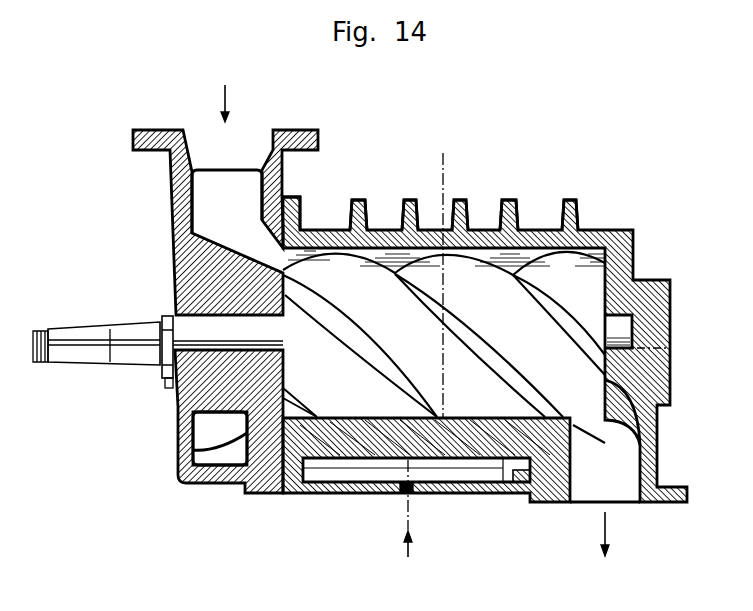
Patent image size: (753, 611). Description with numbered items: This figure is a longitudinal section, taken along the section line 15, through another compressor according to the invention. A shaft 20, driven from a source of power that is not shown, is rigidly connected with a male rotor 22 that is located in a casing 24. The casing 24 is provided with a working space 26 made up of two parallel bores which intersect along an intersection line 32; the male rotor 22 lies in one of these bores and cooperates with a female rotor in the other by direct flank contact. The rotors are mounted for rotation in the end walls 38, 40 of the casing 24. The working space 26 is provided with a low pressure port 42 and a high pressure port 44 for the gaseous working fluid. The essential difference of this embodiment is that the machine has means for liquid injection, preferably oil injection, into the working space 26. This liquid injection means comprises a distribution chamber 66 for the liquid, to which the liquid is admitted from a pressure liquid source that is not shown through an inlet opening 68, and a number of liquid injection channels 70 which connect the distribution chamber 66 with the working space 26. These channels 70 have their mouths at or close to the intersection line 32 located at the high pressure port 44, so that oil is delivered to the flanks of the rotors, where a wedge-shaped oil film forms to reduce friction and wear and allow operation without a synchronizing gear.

The section line 15 is at (443, 153).
The shaft 20 is at (79, 342).
The male rotor 22 is at (638, 249).
The casing 24 is at (330, 228).
The working space 26 is at (477, 273).
The intersection line 32 is at (306, 495).
The end wall 38 is at (193, 387).
The end wall 40 is at (648, 333).
The low pressure port 42 is at (236, 190).
The high pressure port 44 is at (615, 480).
The distribution chamber 66 is at (512, 470).
The inlet opening 68 is at (408, 495).
The liquid injection channels 70 is at (503, 468).